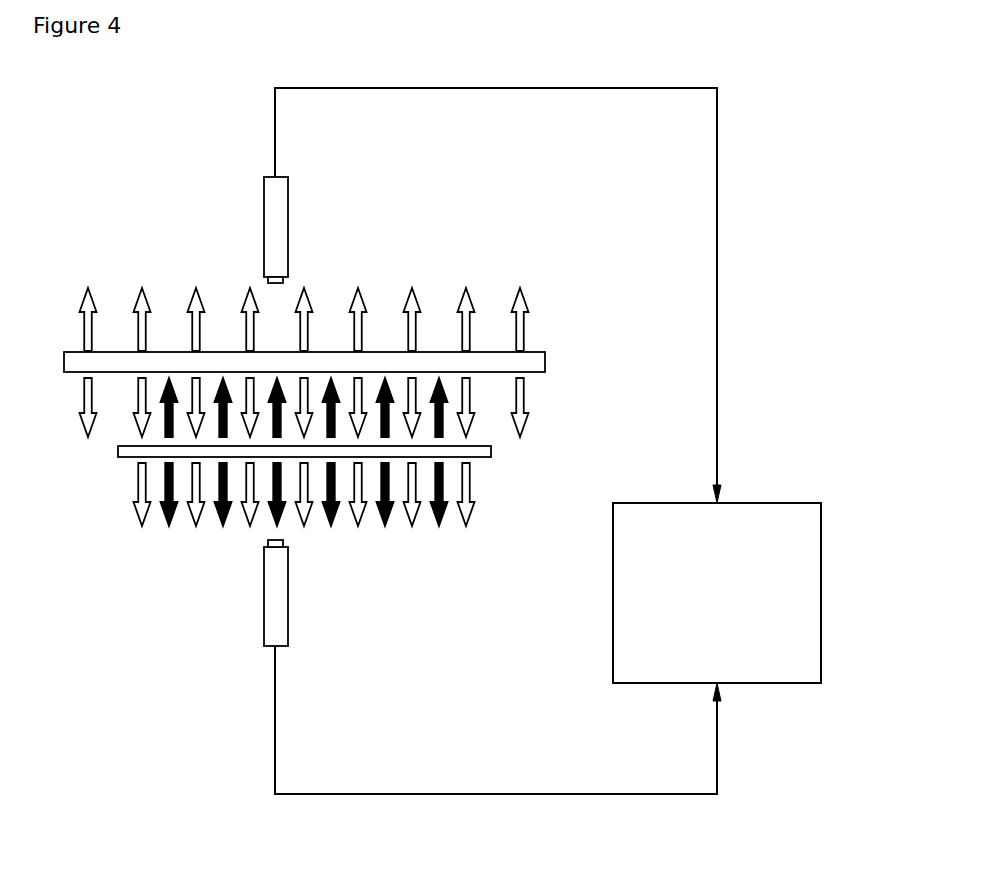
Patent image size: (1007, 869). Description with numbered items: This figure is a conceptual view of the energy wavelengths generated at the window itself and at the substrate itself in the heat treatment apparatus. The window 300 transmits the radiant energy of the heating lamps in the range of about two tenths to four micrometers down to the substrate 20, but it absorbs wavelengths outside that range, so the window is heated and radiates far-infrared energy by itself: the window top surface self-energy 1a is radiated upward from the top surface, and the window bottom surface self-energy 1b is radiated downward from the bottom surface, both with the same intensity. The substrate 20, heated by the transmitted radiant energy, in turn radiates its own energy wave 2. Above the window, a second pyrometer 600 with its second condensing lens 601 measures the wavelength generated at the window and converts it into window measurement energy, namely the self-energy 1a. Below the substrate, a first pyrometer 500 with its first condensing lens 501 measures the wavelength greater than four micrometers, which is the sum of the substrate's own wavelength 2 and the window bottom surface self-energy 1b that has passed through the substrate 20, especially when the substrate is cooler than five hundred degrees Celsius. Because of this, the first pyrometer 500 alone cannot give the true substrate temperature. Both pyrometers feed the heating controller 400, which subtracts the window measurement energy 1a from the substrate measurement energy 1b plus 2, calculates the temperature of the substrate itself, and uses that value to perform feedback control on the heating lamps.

The window top surface self-energy 1a is at (84, 321).
The window bottom surface self-energy 1b is at (84, 397).
The energy wave of the substrate itself 2 is at (165, 403).
The substrate 20 is at (491, 452).
The window 300 is at (545, 362).
The heating controller 400 is at (762, 503).
The first pyrometer 500 is at (280, 595).
The first condensing lens 501 is at (283, 543).
The second pyrometer 600 is at (280, 215).
The second condensing lens 601 is at (283, 280).